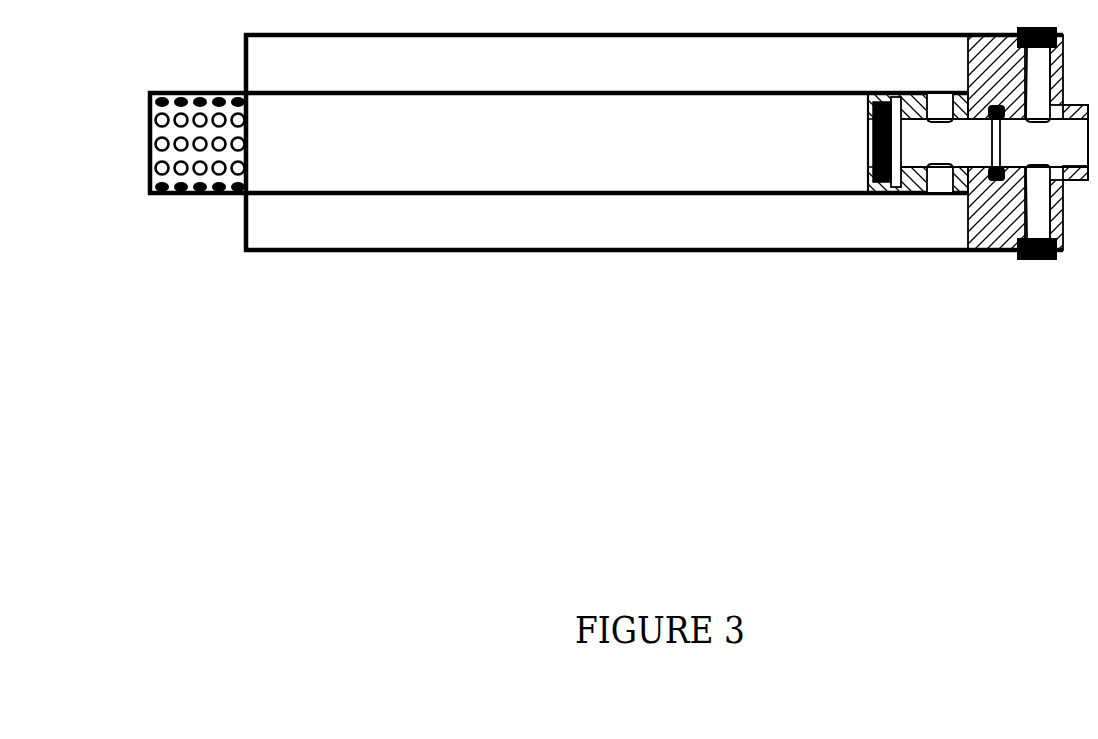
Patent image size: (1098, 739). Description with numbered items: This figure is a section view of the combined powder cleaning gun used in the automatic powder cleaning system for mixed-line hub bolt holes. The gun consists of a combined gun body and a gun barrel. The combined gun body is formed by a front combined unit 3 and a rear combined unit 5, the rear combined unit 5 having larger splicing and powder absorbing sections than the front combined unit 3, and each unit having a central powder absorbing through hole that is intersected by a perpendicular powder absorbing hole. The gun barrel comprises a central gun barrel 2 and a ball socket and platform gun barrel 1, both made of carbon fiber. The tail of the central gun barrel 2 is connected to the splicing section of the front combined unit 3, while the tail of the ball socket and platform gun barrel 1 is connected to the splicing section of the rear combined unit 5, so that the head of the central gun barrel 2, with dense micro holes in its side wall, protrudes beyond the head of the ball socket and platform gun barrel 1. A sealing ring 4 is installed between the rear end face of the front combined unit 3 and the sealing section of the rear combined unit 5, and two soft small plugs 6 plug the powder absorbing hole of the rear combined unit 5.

The ball socket and platform gun barrel 1 is at (477, 251).
The central gun barrel 2 is at (660, 195).
The front combined unit 3 is at (886, 195).
The sealing ring 4 is at (966, 197).
The rear combined unit 5 is at (983, 228).
The small plug 6 is at (1020, 256).